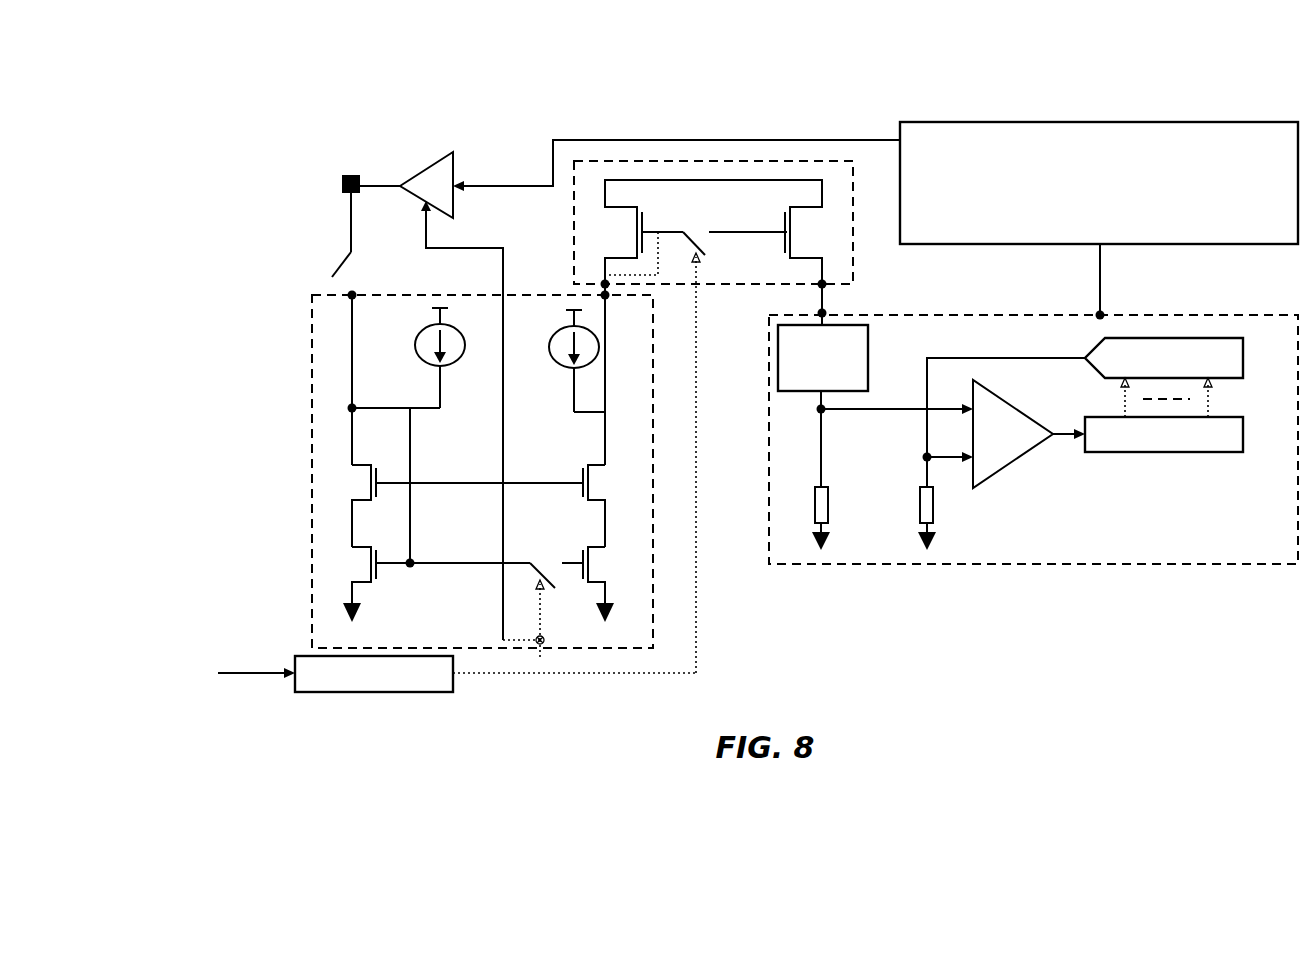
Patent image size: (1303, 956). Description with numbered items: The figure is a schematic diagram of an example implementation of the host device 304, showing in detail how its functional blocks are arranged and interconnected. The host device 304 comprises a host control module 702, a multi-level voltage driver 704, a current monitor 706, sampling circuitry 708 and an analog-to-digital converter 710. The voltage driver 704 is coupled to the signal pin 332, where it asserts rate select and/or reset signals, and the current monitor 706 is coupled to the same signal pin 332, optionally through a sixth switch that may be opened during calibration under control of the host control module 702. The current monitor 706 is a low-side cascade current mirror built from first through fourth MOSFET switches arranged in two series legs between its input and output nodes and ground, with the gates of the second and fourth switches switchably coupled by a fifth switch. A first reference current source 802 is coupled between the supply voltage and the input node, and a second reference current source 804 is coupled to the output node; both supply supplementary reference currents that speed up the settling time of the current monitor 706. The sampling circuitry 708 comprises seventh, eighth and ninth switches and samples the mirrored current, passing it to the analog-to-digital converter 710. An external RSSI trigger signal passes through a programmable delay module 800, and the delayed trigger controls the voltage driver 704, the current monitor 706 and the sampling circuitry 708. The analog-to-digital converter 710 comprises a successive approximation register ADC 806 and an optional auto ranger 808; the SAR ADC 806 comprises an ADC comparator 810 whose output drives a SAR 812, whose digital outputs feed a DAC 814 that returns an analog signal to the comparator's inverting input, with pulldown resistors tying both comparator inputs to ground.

The host device 304 is at (195, 79).
The signal pin 332 is at (351, 175).
The multi-level voltage driver 704 is at (452, 152).
The host control module 702 is at (1099, 221).
The current monitor 706 is at (482, 474).
The sampling circuitry 708 is at (760, 290).
The analog-to-digital converter 710 is at (1033, 439).
The programmable delay module 800 is at (398, 692).
The first reference current source 802 is at (464, 352).
The second reference current source 804 is at (599, 343).
The successive approximation register ADC 806 is at (1149, 485).
The auto ranger 808 is at (868, 340).
The ADC comparator 810 is at (1022, 455).
The SAR 812 is at (1164, 434).
The digital-to-analog converter 814 is at (1164, 358).